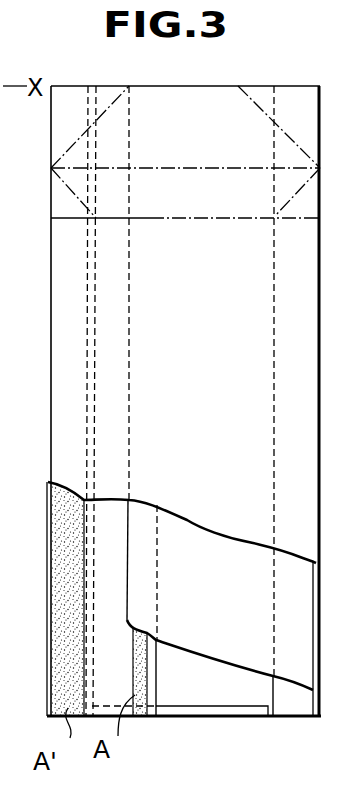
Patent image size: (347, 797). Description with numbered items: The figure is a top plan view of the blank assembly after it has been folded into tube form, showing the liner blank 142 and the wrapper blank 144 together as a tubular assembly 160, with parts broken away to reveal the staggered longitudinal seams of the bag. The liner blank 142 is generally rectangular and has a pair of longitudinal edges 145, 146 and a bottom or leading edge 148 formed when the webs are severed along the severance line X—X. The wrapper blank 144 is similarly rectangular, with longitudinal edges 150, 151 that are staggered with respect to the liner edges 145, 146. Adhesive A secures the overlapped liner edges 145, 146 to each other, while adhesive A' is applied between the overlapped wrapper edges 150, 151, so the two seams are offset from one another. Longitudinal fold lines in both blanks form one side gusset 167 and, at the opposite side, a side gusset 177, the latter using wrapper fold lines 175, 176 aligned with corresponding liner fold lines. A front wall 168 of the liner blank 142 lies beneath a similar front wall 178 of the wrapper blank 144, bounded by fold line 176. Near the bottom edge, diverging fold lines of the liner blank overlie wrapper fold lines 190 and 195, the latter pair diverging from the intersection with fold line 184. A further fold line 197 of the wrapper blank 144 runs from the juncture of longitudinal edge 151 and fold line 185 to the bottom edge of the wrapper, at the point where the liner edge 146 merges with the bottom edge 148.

The tubular assembly 160 is at (90, 55).
The fold line 197 is at (82, 135).
The bottom or leading edge 148 is at (163, 82).
The fold line 195 is at (292, 134).
The fold line 185 is at (176, 169).
The fold line 190 is at (75, 195).
The fold line 184 is at (260, 218).
The longitudinal edge 146 is at (127, 284).
The longitudinal fold line 176 is at (318, 358).
The front wall 178 is at (209, 452).
The longitudinal edge 151 is at (49, 482).
The longitudinal fold line 175 is at (272, 503).
The wrapper blank 144 is at (224, 516).
The side gusset 167 is at (42, 584).
The longitudinal edge 150 is at (87, 598).
The front wall 168 is at (217, 681).
The liner blank 142 is at (183, 681).
The longitudinal edge 145 is at (155, 712).
The side gusset 177 is at (288, 708).